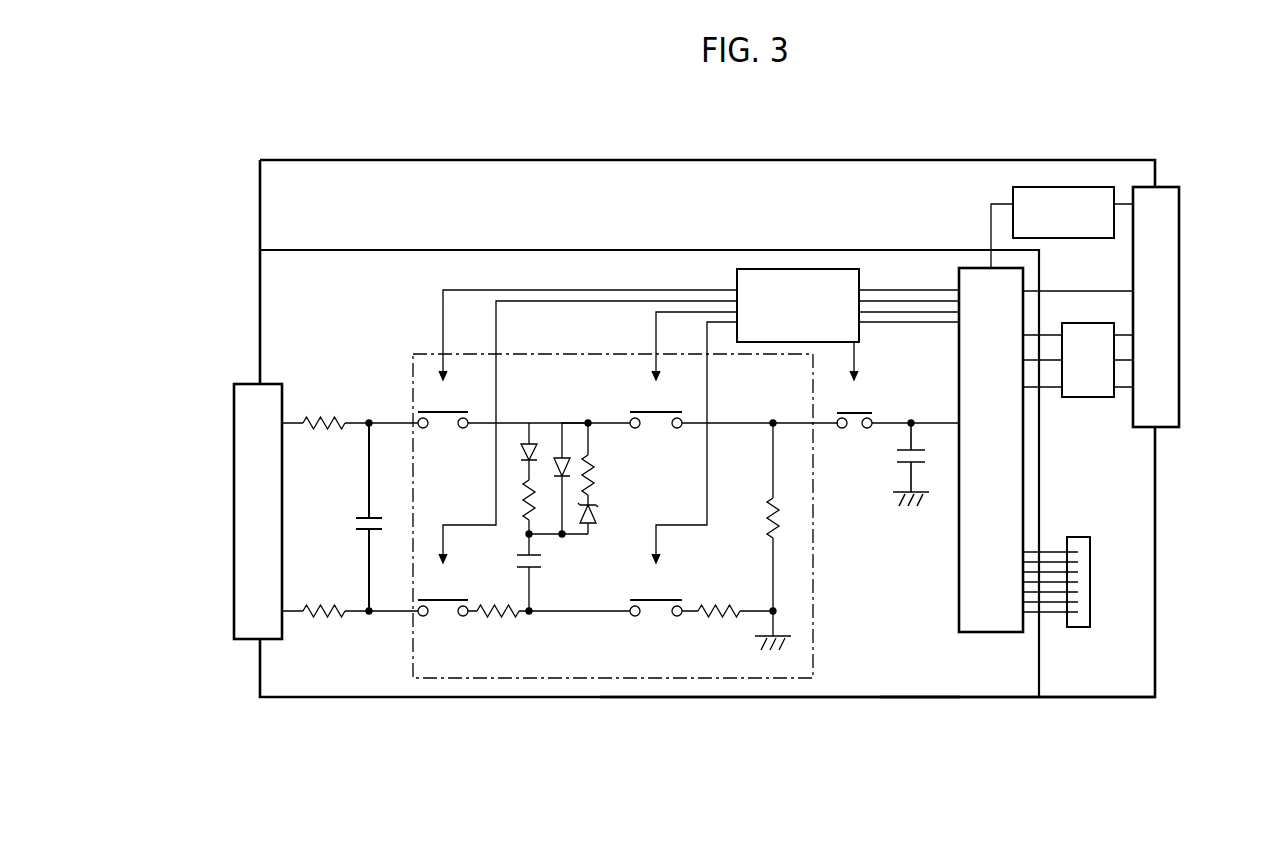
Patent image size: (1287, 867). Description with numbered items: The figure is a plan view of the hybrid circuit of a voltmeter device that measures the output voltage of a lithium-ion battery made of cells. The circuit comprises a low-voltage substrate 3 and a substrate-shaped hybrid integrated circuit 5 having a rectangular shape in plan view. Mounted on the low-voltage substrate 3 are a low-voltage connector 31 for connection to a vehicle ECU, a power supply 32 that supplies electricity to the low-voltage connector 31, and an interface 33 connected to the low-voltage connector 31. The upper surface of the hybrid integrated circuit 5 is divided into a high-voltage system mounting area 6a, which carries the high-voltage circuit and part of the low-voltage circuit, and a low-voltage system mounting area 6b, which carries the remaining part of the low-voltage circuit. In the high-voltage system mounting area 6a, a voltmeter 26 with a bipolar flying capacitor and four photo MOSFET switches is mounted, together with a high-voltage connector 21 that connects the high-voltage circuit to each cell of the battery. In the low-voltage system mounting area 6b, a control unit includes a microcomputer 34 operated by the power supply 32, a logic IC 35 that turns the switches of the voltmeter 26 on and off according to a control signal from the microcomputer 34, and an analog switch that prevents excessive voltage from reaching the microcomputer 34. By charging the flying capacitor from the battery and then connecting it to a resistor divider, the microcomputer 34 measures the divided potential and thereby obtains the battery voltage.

The low-voltage substrate 3 is at (968, 160).
The hybrid integrated circuit 5 is at (969, 700).
The high-voltage system mounting area 6a is at (480, 683).
The low-voltage system mounting area 6b is at (912, 678).
The high-voltage connector 21 is at (233, 516).
The voltmeter 26 is at (610, 660).
The low-voltage connector 31 is at (1180, 296).
The power supply 32 is at (1068, 186).
The interface 33 is at (1085, 398).
The microcomputer 34 is at (1024, 500).
The logic IC 35 is at (803, 268).